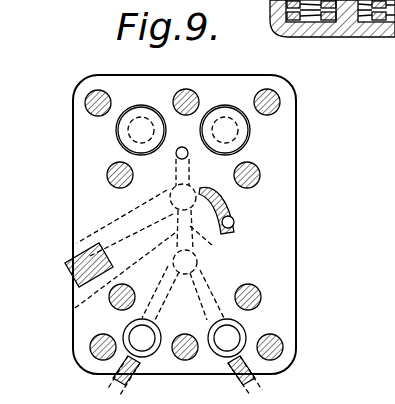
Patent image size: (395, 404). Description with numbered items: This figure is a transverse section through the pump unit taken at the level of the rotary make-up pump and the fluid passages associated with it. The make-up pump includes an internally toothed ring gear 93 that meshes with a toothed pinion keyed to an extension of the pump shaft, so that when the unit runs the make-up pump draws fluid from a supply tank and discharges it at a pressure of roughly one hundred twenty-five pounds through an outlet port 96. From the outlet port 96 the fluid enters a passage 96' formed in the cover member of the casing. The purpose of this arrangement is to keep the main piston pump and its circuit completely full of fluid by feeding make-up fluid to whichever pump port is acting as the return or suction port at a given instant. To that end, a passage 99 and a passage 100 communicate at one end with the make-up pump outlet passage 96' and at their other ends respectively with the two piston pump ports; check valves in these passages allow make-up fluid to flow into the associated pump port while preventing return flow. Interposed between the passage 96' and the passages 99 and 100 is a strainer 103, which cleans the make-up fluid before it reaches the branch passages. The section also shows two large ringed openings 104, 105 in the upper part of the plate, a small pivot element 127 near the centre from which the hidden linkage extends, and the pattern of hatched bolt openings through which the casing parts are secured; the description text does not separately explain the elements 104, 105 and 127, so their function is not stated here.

The ring gear 93 is at (292, 200).
The passage 99 is at (277, 102).
The bushing 104 is at (233, 132).
The bushing 105 is at (127, 131).
The pivot pin 127 is at (186, 157).
The outlet port 96 is at (236, 210).
The passage 96' is at (216, 243).
The strainer 103 is at (117, 227).
The passage 100 is at (205, 290).